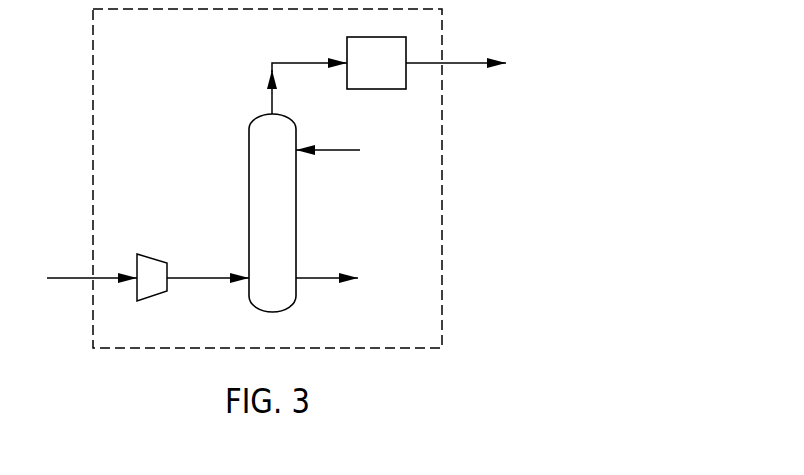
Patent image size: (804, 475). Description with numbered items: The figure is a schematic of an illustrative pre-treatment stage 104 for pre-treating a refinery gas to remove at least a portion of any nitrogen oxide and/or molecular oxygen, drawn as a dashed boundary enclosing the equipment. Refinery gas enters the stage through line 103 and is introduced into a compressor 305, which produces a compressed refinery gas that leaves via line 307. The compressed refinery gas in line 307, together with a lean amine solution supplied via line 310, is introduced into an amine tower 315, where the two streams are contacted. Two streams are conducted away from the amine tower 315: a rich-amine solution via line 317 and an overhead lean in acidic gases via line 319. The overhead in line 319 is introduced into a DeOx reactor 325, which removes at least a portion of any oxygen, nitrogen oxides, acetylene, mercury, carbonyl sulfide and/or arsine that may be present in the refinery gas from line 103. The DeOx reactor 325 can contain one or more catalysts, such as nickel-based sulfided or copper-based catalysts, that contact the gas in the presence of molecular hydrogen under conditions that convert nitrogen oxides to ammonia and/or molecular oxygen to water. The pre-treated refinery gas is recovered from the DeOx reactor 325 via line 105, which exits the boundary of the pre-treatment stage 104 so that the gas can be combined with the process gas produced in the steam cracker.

The line 103 is at (60, 272).
The pre-treatment stage 104 is at (93, 78).
The line 105 is at (461, 58).
The compressor 305 is at (150, 253).
The line 307 is at (206, 272).
The line 310 is at (325, 145).
The amine tower 315 is at (249, 189).
The line 317 is at (322, 272).
The line 319 is at (293, 58).
The DeOx reactor 325 is at (391, 72).